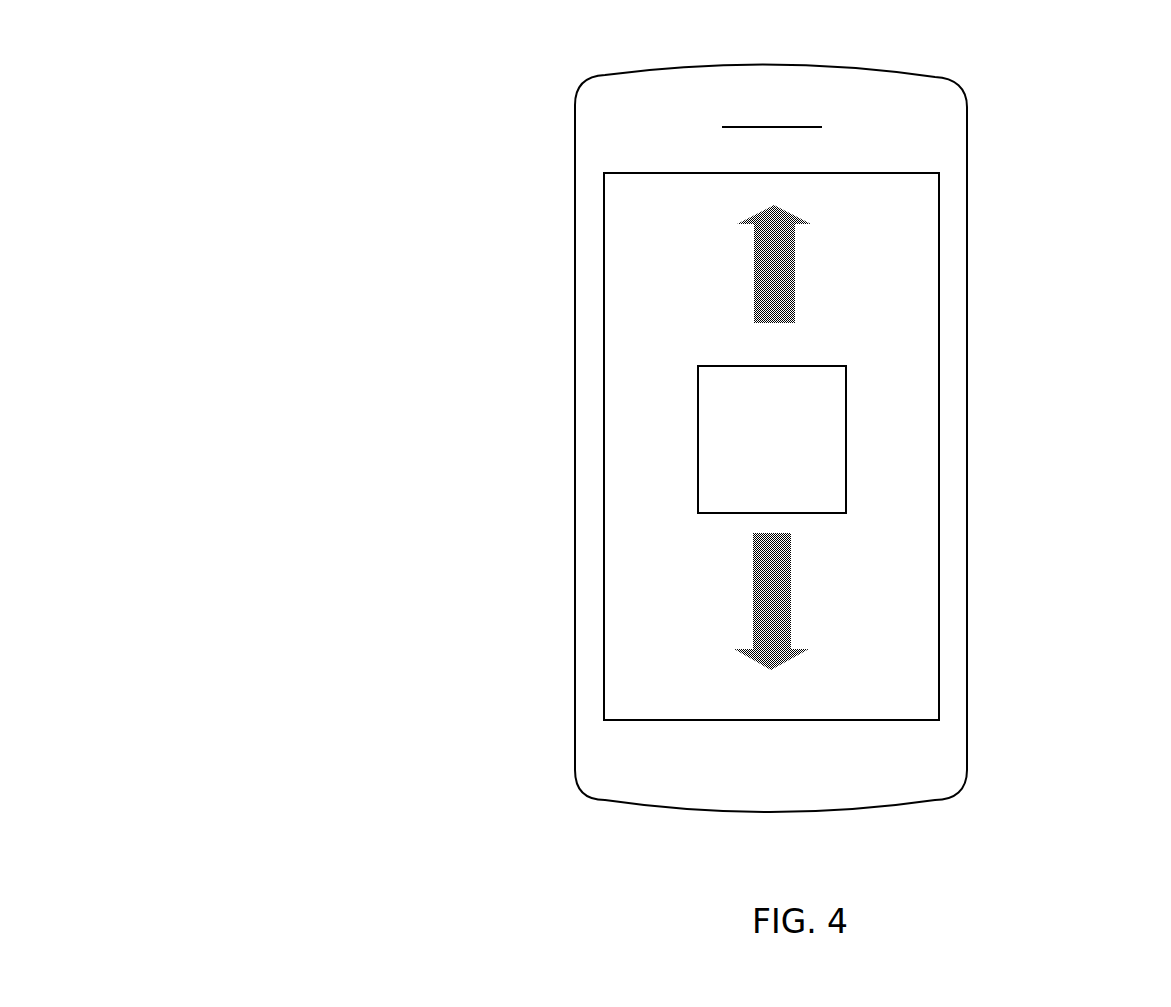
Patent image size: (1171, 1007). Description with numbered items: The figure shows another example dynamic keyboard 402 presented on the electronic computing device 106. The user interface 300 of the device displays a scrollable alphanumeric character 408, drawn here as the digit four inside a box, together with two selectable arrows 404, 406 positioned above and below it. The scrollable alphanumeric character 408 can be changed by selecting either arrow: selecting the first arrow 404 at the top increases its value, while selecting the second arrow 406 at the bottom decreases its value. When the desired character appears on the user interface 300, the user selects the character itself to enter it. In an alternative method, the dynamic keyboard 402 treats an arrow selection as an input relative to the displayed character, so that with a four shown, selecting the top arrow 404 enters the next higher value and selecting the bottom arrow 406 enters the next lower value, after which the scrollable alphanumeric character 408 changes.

The electronic computing device 106 is at (372, 118).
The user interface 300 is at (669, 581).
The dynamic keyboard 402 is at (992, 487).
The first arrow 404 is at (780, 262).
The second arrow 406 is at (772, 608).
The scrollable alphanumeric character 408 is at (818, 431).